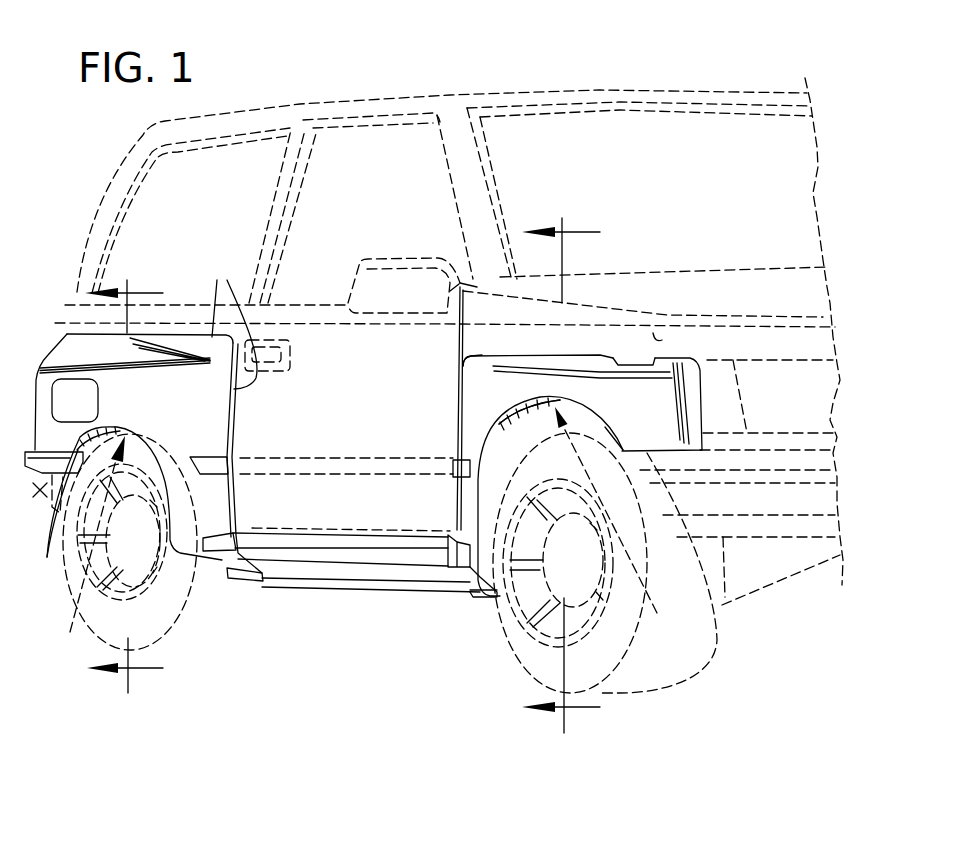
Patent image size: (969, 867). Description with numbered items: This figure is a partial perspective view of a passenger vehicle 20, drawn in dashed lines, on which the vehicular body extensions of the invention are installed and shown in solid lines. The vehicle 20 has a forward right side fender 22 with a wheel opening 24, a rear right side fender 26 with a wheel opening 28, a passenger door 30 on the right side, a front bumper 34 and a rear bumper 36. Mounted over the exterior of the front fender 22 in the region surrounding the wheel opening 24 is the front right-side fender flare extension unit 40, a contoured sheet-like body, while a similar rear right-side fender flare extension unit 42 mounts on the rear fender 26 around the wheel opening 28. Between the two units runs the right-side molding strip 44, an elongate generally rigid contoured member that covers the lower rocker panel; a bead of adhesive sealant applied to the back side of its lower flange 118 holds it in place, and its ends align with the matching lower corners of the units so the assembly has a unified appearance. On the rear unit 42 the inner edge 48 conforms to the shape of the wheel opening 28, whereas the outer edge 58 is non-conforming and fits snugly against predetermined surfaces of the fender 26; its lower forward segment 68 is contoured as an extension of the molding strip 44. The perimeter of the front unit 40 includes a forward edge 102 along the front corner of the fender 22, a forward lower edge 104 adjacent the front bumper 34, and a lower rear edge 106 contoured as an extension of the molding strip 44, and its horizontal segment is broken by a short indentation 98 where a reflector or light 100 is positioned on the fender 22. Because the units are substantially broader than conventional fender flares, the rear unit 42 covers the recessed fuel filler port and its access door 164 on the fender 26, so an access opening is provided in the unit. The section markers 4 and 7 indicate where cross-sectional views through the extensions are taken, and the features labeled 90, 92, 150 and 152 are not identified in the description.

The passenger vehicle 20 is at (580, 83).
The forward right side fender 22 is at (560, 337).
The wheel opening 24 is at (616, 527).
The rear right side fender 26 is at (167, 322).
The wheel opening 28 is at (91, 548).
The passenger door 30 is at (373, 396).
The front bumper 34 is at (768, 497).
The rear bumper 36 is at (40, 483).
The front right-side fender flare extension unit 40 is at (643, 413).
The rear right-side fender flare extension unit 42 is at (185, 416).
The right-side molding strip 44 is at (311, 550).
The inner edge 48 is at (55, 518).
The outer edge 58 is at (231, 318).
The lower forward segment 68 is at (248, 580).
The wheel arch lip 90 is at (504, 420).
The fender front corner 92 is at (457, 397).
The short indentation 98 is at (618, 360).
The reflector or light 100 is at (657, 322).
The forward edge 102 is at (688, 400).
The forward lower edge 104 is at (667, 452).
The lower rear edge 106 is at (481, 597).
The lower flange 118 is at (372, 582).
The step rear end cap 150 is at (470, 577).
The step front end cap 152 is at (232, 557).
The access door 164 is at (68, 402).
The section line 4- 4 is at (124, 481).
The section line 7- 7 is at (561, 470).